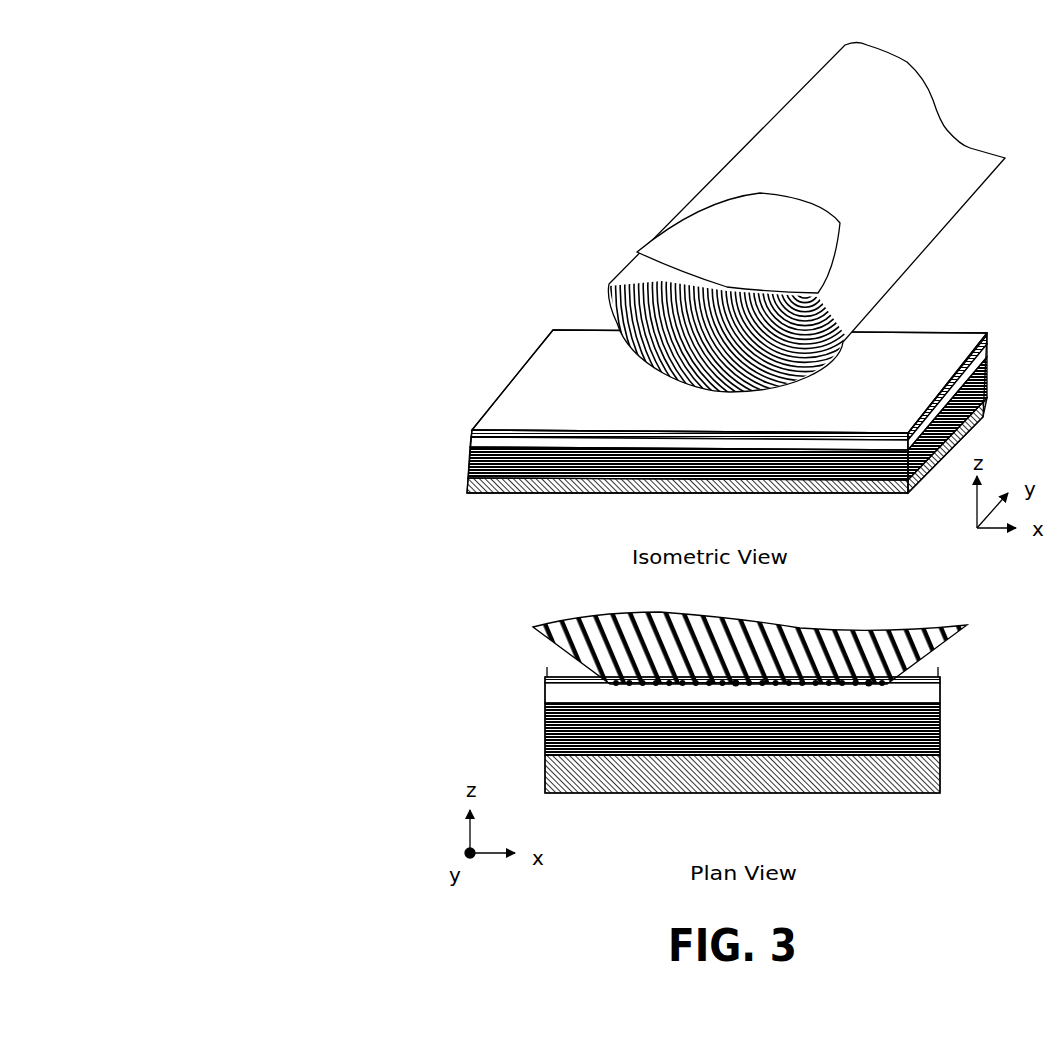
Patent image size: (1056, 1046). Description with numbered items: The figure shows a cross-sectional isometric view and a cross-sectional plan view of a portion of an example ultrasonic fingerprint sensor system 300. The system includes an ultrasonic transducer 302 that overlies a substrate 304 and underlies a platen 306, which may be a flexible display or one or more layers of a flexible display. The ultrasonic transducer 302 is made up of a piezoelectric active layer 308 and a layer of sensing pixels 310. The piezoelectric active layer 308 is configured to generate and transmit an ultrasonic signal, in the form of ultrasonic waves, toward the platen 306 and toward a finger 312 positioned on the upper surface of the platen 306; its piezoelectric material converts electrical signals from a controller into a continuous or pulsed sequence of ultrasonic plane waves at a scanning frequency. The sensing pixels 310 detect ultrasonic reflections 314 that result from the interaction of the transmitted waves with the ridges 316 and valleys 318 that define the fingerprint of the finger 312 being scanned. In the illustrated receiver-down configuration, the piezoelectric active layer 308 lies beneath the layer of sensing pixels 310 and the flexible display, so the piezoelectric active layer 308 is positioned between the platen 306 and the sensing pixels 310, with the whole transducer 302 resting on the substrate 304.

The ultrasonic fingerprint sensor system 300 is at (272, 127).
The ultrasonic transducer 302 is at (729, 566).
The substrate 304 is at (983, 417).
The platen 306 is at (987, 341).
The piezoelectric active layer 308 is at (986, 362).
The sensing pixels 310 is at (984, 392).
The finger 312 is at (930, 218).
The ultrasonic reflections 314 is at (640, 688).
The ridges 316 is at (737, 681).
The valleys 318 is at (867, 683).